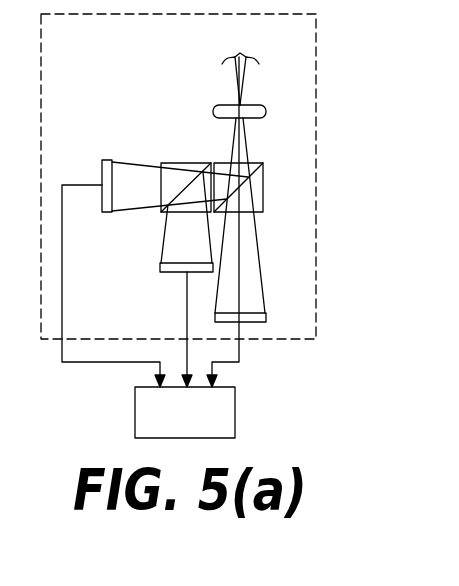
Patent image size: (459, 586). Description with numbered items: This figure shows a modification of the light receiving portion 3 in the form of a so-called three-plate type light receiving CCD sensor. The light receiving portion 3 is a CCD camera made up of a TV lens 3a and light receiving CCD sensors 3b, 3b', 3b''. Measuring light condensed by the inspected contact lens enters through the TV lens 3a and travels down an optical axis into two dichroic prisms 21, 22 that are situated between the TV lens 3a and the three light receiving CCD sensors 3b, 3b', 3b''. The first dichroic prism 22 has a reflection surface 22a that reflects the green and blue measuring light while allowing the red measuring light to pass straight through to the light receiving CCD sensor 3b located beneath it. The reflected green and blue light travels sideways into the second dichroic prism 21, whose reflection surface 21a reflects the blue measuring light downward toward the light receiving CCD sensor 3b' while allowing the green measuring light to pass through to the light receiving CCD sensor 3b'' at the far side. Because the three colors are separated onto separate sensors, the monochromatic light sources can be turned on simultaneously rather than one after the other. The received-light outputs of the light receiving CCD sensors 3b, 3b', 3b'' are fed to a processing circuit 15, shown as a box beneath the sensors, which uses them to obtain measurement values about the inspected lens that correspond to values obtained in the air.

The light receiving portion 3 is at (317, 190).
The TV lens 3a is at (253, 105).
The light receiving CCD sensor 3b is at (281, 351).
The light receiving CCD sensor 3b' is at (172, 296).
The light receiving CCD sensor 3b'' is at (93, 225).
The processing circuit 15 is at (235, 427).
The dichroic prism 21 is at (185, 163).
The reflection surface 21a is at (184, 190).
The dichroic prism 22 is at (253, 163).
The reflection surface 22a is at (263, 210).